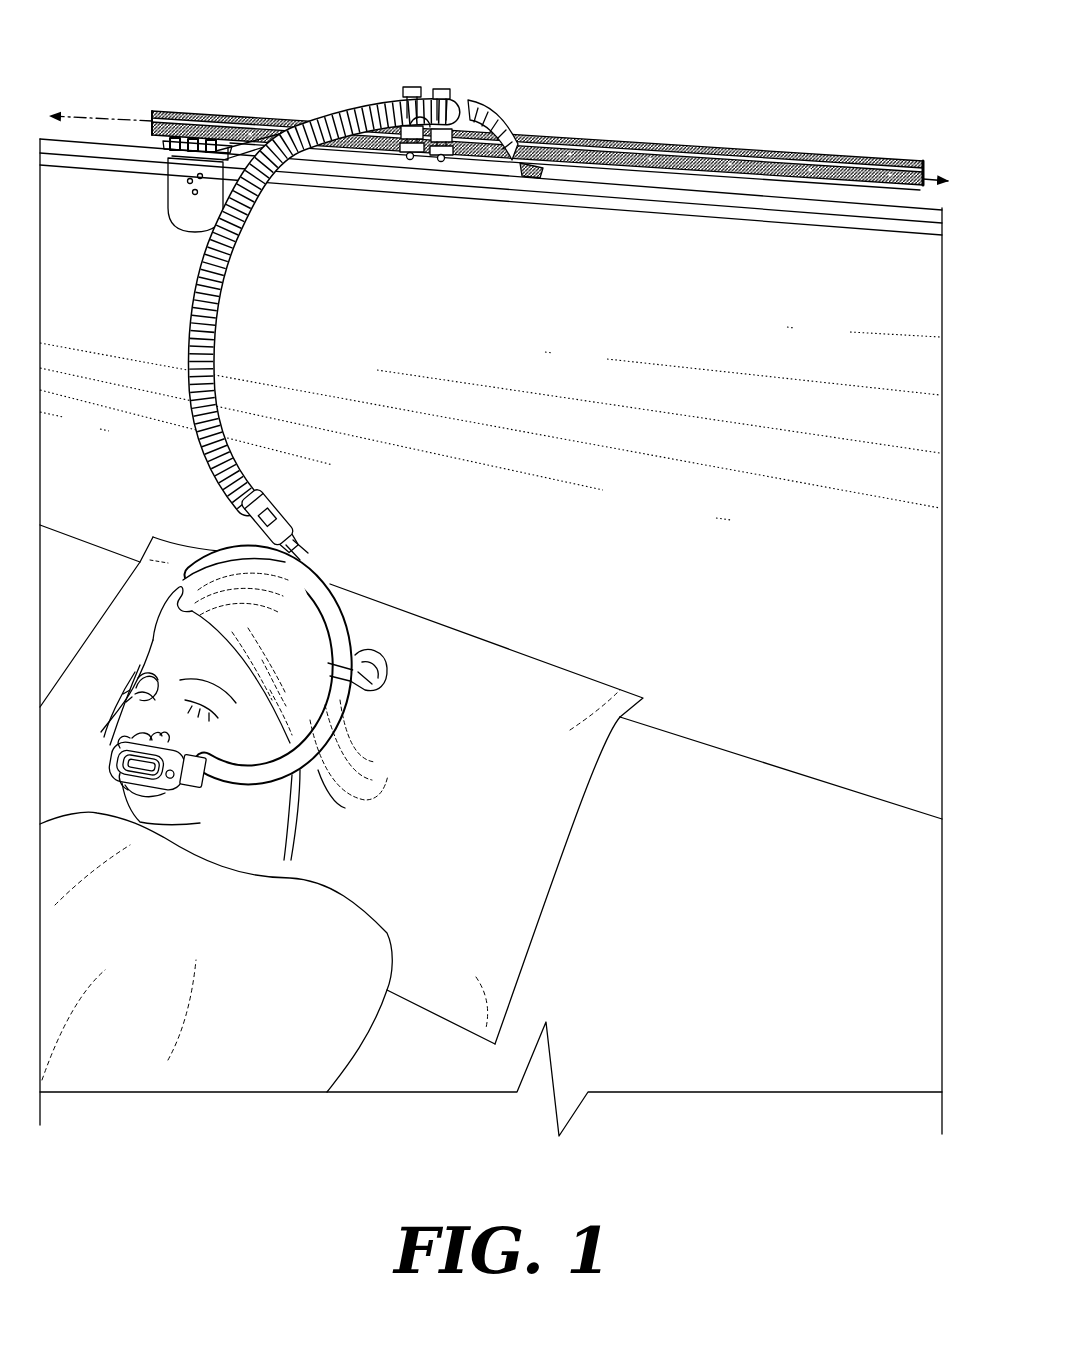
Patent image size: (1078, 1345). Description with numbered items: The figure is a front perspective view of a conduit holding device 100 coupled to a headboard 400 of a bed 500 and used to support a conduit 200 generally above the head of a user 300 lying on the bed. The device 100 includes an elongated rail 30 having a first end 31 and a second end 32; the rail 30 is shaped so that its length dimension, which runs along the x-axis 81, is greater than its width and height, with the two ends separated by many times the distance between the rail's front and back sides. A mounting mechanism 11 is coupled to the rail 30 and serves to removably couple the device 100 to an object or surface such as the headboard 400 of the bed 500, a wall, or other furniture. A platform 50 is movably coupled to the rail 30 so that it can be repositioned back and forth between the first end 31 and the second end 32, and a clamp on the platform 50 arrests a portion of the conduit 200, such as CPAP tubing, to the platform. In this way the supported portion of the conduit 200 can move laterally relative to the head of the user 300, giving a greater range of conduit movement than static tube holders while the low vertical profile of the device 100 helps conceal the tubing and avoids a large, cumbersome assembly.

The conduit holding device 100 is at (501, 283).
The rail 30 is at (542, 105).
The first end 31 is at (154, 97).
The second end 32 is at (926, 154).
The platform 50 is at (448, 96).
The x-axis 81 is at (95, 120).
The mounting mechanism 11 is at (174, 160).
The conduit 200 is at (205, 340).
The user 300 is at (163, 643).
The headboard 400 is at (623, 592).
The bed 500 is at (742, 865).